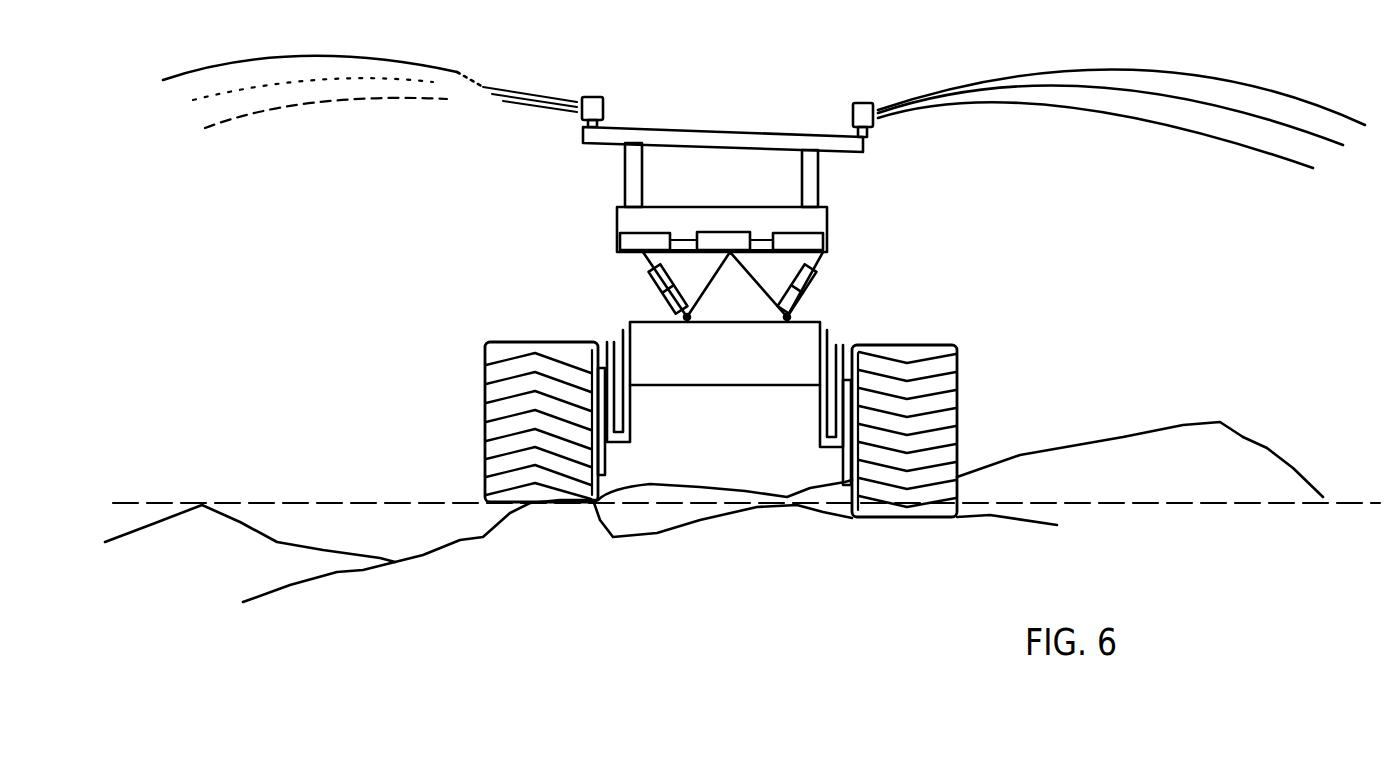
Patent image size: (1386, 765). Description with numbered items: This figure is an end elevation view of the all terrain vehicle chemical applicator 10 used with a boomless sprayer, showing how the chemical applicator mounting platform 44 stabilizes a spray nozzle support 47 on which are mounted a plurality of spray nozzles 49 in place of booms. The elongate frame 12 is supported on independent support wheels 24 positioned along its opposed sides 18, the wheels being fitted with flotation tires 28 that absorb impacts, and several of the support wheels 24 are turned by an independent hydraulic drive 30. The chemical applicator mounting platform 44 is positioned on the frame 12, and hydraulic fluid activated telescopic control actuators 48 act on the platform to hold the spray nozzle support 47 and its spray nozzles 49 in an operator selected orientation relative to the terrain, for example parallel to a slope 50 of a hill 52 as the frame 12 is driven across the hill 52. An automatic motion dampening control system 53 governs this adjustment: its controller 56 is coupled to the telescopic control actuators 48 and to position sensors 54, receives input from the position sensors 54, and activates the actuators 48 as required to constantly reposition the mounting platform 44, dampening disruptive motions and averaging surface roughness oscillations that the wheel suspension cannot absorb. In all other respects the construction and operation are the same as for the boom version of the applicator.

The all terrain vehicle chemical applicator 10 is at (458, 583).
The elongate frame 12 is at (687, 387).
The opposed sides 18 is at (630, 323).
The support wheels 24 is at (485, 352).
The flotation tires 28 is at (493, 406).
The independent hydraulic drive 30 is at (607, 453).
The chemical applicator mounting platform 44 is at (725, 235).
The boom bar 47 is at (695, 140).
The telescopic control actuators 48 is at (653, 297).
The spray nozzles 49 is at (862, 103).
The slope 50 is at (1130, 432).
The hill 52 is at (1225, 467).
The automatic motion dampening control system 53 is at (540, 275).
The position sensors 54 is at (632, 240).
The controller 56 is at (707, 232).